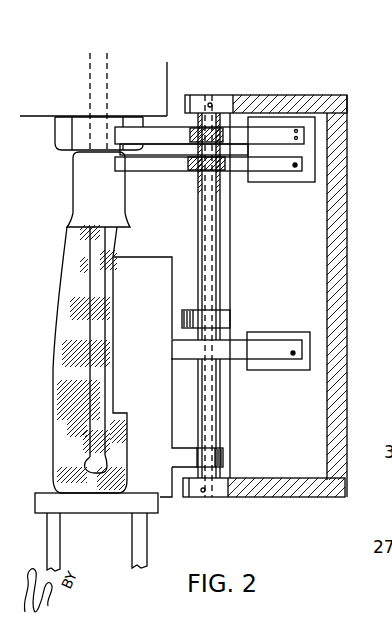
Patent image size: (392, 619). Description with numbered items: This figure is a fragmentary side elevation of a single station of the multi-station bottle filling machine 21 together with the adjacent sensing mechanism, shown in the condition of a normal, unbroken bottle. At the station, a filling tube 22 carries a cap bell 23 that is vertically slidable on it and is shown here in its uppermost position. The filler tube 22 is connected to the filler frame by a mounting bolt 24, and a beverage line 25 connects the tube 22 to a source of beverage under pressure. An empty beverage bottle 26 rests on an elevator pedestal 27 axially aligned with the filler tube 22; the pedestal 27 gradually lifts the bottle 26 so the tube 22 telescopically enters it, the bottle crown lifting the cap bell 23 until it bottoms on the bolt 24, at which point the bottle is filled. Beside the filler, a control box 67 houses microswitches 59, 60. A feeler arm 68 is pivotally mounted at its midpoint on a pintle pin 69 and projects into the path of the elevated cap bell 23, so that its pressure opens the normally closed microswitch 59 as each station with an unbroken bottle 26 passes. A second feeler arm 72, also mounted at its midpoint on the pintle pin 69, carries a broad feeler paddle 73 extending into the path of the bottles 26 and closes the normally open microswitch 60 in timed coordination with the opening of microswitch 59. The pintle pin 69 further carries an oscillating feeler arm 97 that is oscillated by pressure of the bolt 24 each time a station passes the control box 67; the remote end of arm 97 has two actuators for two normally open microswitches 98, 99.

The bottle filling machine 21 is at (163, 78).
The filling tube 22 is at (90, 279).
The cap bell 23 is at (82, 207).
The mounting bolt 24 is at (62, 132).
The beverage line 25 is at (90, 92).
The beverage bottle 26 is at (55, 370).
The elevator pedestal 27 is at (143, 537).
The microswitch 59 is at (289, 172).
The microswitch 60 is at (278, 335).
The control box 67 is at (295, 500).
The feeler arm 68 is at (165, 171).
The pintle pin 69 is at (198, 222).
The feeler arm 72 is at (238, 354).
The feeler paddle 73 is at (160, 291).
The oscillating feeler arm 97 is at (160, 133).
The microswitch 98 is at (288, 122).
The microswitch 99 is at (303, 140).